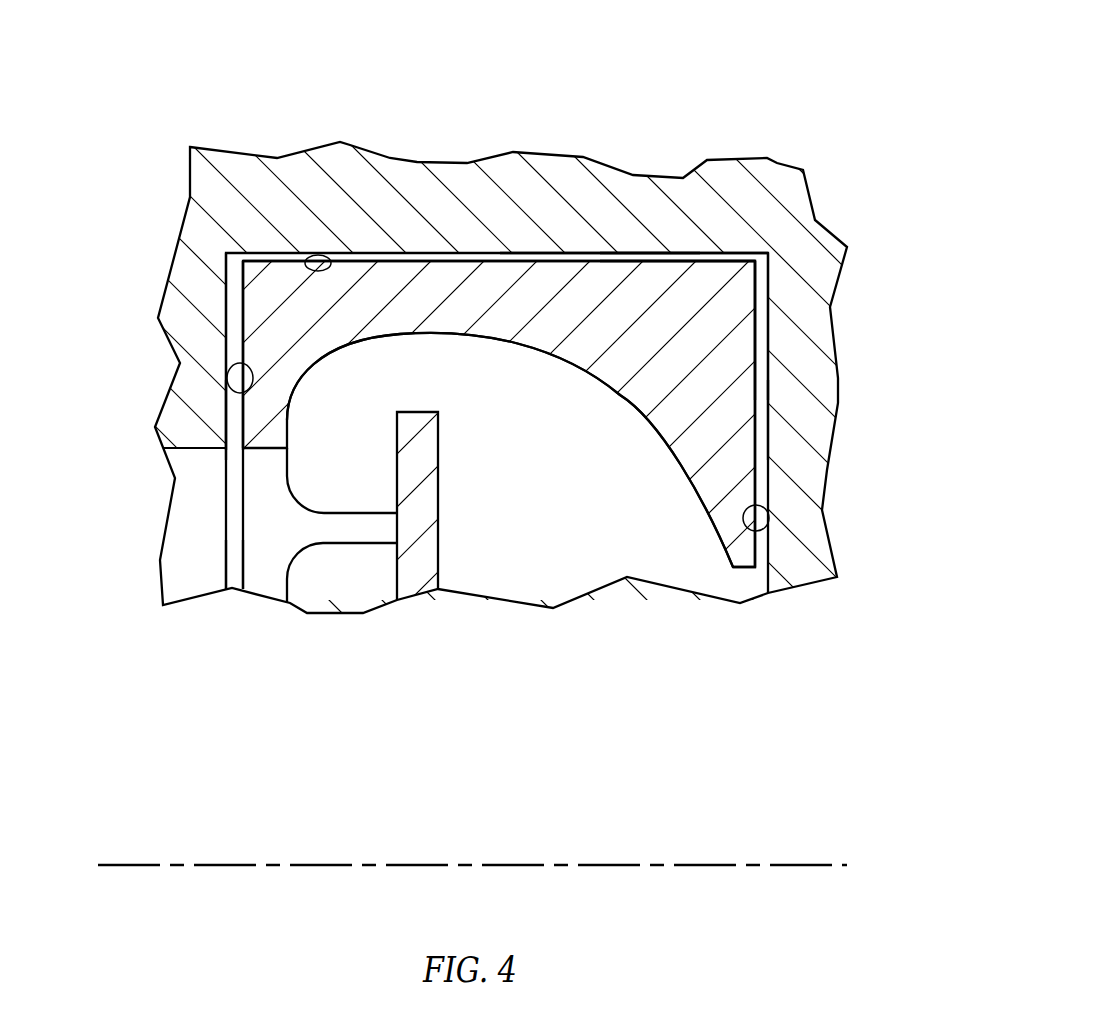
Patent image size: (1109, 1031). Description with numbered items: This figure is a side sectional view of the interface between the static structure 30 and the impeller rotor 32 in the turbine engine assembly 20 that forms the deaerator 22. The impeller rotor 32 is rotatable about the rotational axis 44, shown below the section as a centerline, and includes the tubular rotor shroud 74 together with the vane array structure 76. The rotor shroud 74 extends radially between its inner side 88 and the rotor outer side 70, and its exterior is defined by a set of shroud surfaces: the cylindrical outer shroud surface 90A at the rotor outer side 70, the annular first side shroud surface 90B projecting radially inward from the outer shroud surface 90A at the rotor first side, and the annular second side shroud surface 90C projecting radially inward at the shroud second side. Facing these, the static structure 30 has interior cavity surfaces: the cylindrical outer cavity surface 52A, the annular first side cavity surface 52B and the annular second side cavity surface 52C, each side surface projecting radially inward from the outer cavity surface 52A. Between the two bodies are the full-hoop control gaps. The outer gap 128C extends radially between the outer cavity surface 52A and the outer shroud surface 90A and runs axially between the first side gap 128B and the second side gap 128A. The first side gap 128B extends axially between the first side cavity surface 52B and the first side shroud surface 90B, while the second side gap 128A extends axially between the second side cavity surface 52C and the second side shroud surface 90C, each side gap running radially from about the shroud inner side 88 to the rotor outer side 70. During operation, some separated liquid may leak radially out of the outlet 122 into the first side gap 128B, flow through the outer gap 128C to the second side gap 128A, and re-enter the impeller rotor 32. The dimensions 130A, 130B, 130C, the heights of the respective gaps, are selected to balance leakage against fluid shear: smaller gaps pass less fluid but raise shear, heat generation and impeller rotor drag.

The assembly 20 is at (839, 44).
The deaerator 22 is at (792, 83).
The static structure 30 is at (803, 172).
The impeller rotor 32 is at (421, 253).
The rotational axis 44 is at (833, 865).
The outer cavity surface 52A is at (330, 255).
The first side cavity surface 52B is at (243, 393).
The second side cavity surface 52C is at (770, 520).
The outer side 70 is at (536, 385).
The rotor shroud 74 is at (757, 282).
The vane array structure 76 is at (247, 596).
The inner side 88 is at (487, 336).
The outer shroud surface 90A is at (517, 261).
The first side shroud surface 90B is at (243, 330).
The second side shroud surface 90C is at (755, 460).
The outlet 122 is at (253, 540).
The second side gap 128A is at (762, 417).
The first side gap 128B is at (227, 422).
The outer gap 128C is at (609, 253).
The dimension 130A is at (755, 335).
The dimension 130B is at (243, 282).
The dimension 130C is at (697, 261).